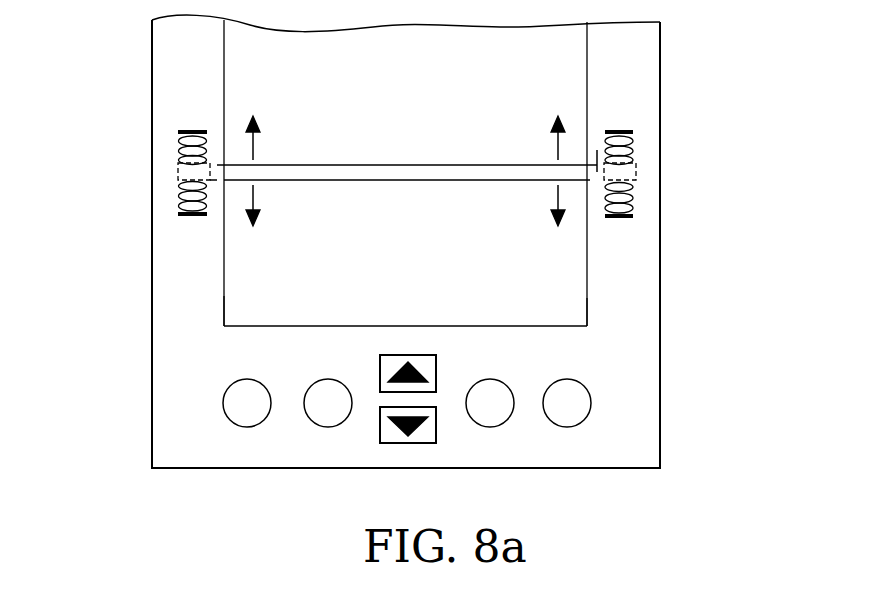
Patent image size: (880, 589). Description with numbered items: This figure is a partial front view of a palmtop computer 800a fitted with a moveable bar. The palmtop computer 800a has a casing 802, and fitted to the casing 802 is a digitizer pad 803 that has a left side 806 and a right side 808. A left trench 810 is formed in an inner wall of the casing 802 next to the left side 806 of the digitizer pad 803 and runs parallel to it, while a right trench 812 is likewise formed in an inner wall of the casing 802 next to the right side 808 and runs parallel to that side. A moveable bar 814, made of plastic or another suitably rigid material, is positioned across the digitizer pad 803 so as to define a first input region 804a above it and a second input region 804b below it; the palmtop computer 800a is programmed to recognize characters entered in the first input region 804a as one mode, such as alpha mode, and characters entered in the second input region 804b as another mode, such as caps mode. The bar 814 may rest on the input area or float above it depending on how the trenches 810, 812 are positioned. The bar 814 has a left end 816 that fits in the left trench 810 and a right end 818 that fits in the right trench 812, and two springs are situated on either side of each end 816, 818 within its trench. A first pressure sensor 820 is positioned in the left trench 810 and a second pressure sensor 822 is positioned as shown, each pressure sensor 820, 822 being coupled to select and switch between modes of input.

The palmtop computer 800a is at (697, 490).
The casing 802 is at (653, 262).
The digitizer pad 803 is at (553, 245).
The first input region 804a is at (313, 97).
The second input region 804b is at (289, 299).
The left side 806 is at (224, 297).
The right side 808 is at (587, 298).
The left trench 810 is at (177, 152).
The right trench 812 is at (635, 162).
The moveable bar 814 is at (512, 173).
The left end 816 is at (217, 180).
The right end 818 is at (597, 150).
The first pressure sensor 820 is at (178, 132).
The second pressure sensor 822 is at (178, 214).